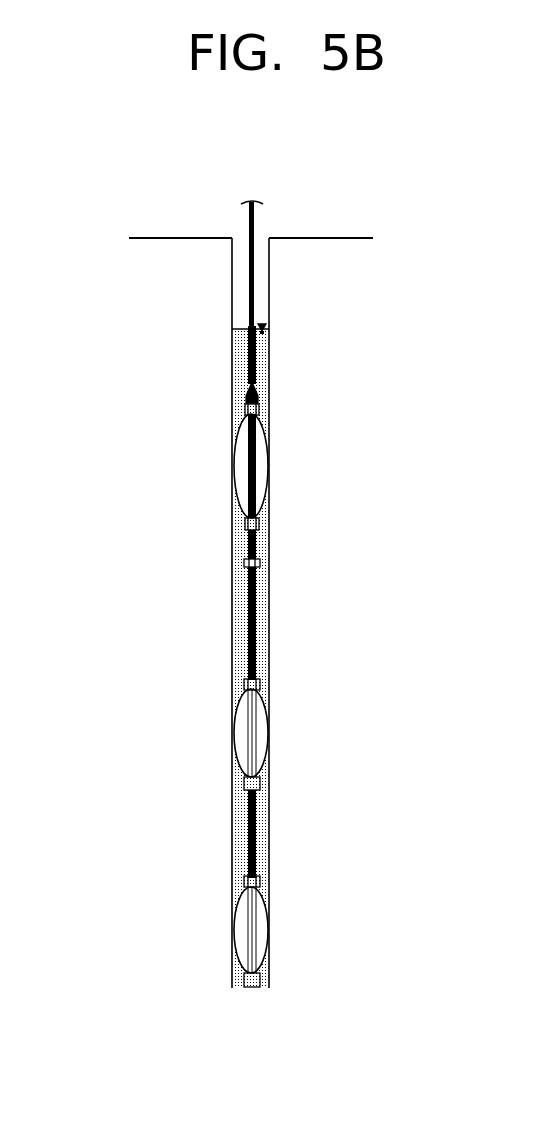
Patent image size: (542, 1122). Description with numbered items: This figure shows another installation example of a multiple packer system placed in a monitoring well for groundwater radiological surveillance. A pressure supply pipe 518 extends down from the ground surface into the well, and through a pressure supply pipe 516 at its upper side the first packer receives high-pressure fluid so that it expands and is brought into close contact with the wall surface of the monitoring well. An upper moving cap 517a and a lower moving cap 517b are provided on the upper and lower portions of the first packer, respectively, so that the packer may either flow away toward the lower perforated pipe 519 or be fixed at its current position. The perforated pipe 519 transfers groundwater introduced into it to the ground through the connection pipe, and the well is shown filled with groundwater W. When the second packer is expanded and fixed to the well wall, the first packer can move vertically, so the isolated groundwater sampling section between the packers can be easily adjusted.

The pressure supply pipe 518 is at (252, 250).
The pressure supply pipe 516 is at (259, 394).
The upper moving cap 517a is at (243, 413).
The lower moving cap 517b is at (243, 518).
The lower perforated pipe 519 is at (256, 603).
The water in borehole W is at (265, 658).